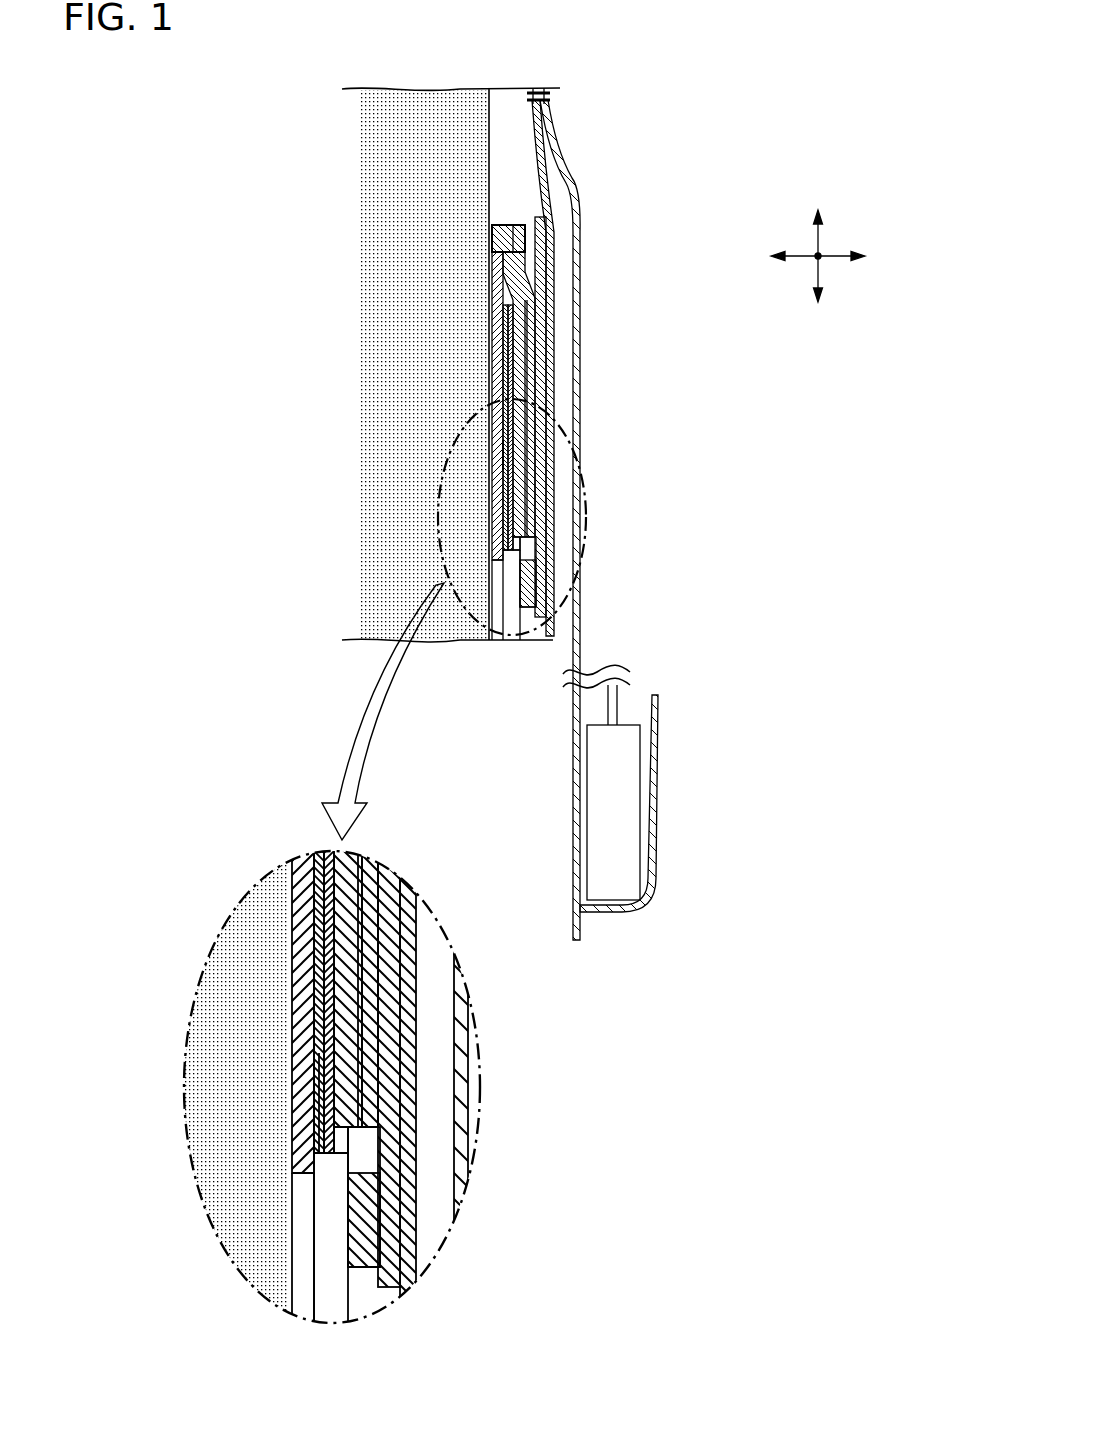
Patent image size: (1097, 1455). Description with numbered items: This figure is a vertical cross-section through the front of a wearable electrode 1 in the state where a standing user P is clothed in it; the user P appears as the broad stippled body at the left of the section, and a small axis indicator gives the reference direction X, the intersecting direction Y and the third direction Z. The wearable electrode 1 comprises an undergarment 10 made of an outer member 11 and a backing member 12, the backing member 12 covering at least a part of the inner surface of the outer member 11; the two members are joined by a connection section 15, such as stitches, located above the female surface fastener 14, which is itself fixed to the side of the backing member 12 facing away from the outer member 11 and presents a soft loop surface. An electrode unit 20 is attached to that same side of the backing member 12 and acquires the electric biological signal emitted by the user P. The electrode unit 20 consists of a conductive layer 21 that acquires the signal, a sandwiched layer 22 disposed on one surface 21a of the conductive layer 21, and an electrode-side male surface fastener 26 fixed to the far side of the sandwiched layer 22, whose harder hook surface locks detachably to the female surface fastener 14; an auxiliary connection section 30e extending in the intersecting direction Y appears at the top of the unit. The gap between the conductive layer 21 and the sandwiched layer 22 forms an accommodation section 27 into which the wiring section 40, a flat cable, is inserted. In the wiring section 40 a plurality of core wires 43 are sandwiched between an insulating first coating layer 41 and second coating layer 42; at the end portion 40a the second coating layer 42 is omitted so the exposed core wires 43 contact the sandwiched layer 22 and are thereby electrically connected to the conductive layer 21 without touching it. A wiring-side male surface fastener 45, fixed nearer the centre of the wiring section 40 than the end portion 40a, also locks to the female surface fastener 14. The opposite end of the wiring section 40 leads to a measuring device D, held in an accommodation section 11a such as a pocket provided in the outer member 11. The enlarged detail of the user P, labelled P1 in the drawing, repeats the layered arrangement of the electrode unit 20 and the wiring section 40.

The wearable electrode 1 is at (686, 65).
The undergarment 10 is at (558, 108).
The outer member 11 is at (556, 147).
The accommodation section 11a is at (650, 795).
The backing member 12 is at (548, 172).
The female surface fastener 14 is at (541, 325).
The connection section 15 is at (530, 91).
The electrode unit 20 is at (287, 712).
The conductive layer 21 is at (298, 938).
The one surface of the conductive layer 21a is at (314, 893).
The sandwiched layer 22 is at (340, 970).
The electrode-side male surface fastener 26 is at (365, 1013).
The accommodation section 27 is at (488, 455).
The auxiliary connection section 30e is at (523, 250).
The wiring section 40 is at (386, 958).
The end portion of the wiring section 40a is at (492, 342).
The first coating layer 41 is at (320, 1078).
The second coating layer 42 is at (296, 1145).
The core wires 43 is at (328, 1110).
The wiring-side male surface fastener 45 is at (527, 575).
The user P is at (365, 72).
The panel surface portion P1 is at (403, 202).
The measuring device D is at (600, 848).
The reference direction X is at (818, 268).
The intersecting direction Y is at (818, 256).
The Z axis Z is at (832, 256).